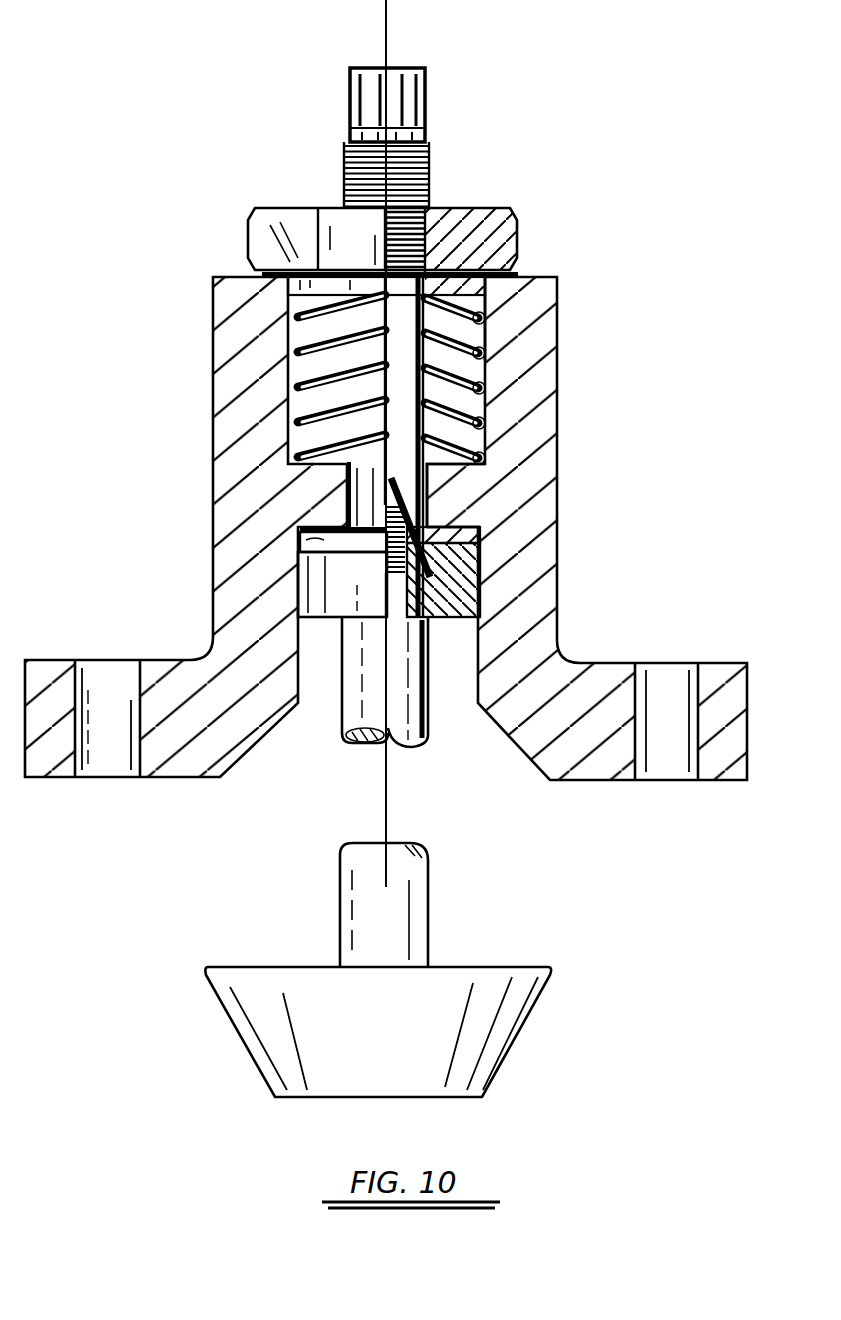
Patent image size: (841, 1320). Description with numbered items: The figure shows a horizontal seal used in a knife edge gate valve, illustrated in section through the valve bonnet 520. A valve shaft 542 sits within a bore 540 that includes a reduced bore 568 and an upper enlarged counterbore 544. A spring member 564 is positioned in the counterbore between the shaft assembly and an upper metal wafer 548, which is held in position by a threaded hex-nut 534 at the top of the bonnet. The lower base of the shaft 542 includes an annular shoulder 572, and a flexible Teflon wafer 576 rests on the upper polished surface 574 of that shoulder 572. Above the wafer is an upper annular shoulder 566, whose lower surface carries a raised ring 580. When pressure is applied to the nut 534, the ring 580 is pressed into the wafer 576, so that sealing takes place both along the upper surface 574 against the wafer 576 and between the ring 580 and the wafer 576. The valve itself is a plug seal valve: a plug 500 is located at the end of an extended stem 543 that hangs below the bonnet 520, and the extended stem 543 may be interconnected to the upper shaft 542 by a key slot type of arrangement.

The plug 500 is at (287, 994).
The valve bonnet 520 is at (537, 313).
The threaded hex-nut 534 is at (287, 227).
The bore 540 is at (455, 672).
The valve shaft 542 is at (400, 352).
The extended stem 543 is at (342, 713).
The upper enlarged counterbore 544 is at (310, 410).
The upper metal wafer 548 is at (290, 287).
The spring member 564 is at (490, 295).
The upper annular shoulder 566 is at (453, 477).
The reduced bore 568 is at (347, 485).
The annular shoulder 572 is at (483, 568).
The upper polished surface 574 is at (297, 548).
The flexible Teflon wafer 576 is at (483, 537).
The raised ring 580 is at (457, 518).